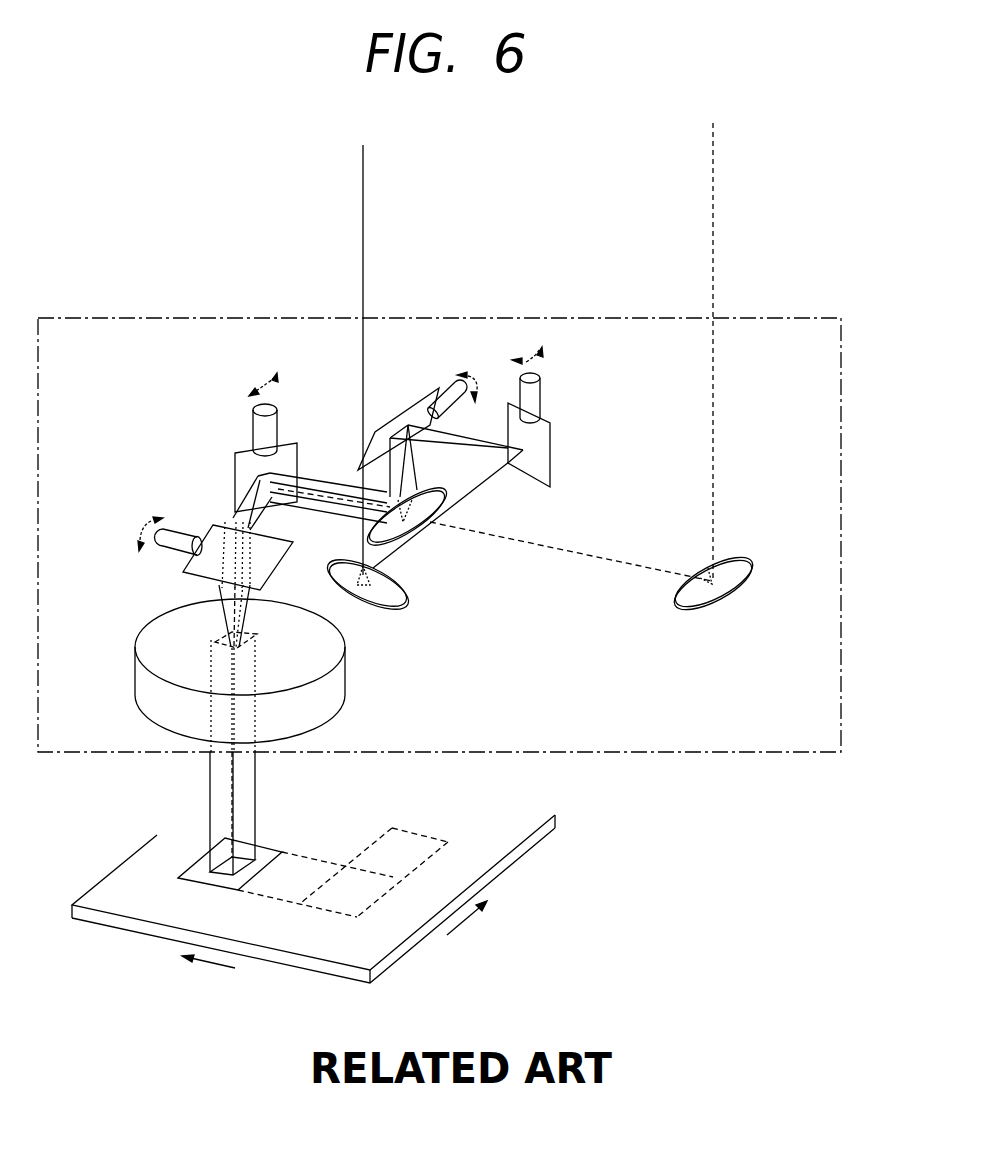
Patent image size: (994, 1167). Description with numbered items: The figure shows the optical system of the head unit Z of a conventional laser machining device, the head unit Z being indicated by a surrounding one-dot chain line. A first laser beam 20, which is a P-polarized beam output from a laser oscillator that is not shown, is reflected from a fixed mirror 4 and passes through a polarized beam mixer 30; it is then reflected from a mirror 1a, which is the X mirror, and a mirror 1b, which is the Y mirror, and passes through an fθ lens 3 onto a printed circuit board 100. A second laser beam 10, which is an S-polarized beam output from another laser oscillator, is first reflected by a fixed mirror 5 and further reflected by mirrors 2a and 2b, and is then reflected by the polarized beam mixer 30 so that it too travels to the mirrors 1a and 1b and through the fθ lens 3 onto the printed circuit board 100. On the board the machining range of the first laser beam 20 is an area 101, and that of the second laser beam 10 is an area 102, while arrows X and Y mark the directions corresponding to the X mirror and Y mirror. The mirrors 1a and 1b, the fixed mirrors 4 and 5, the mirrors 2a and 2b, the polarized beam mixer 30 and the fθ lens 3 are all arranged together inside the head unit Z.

The mirror (X mirror) 1a is at (235, 463).
The mirror (Y mirror) 1b is at (183, 573).
The mirror 2a is at (541, 427).
The mirror 2b is at (422, 430).
The fθ lens 3 is at (342, 645).
The fixed mirror 4 is at (688, 604).
The fixed mirror 5 is at (405, 582).
The second laser beam 10 is at (364, 200).
The first laser beam 20 is at (713, 168).
The polarized beam mixer 30 is at (428, 497).
The printed circuit board 100 is at (512, 832).
The area 101 is at (203, 878).
The area 102 is at (260, 843).
The X direction X is at (208, 968).
The Y direction Y is at (465, 923).
The head unit Z is at (841, 382).